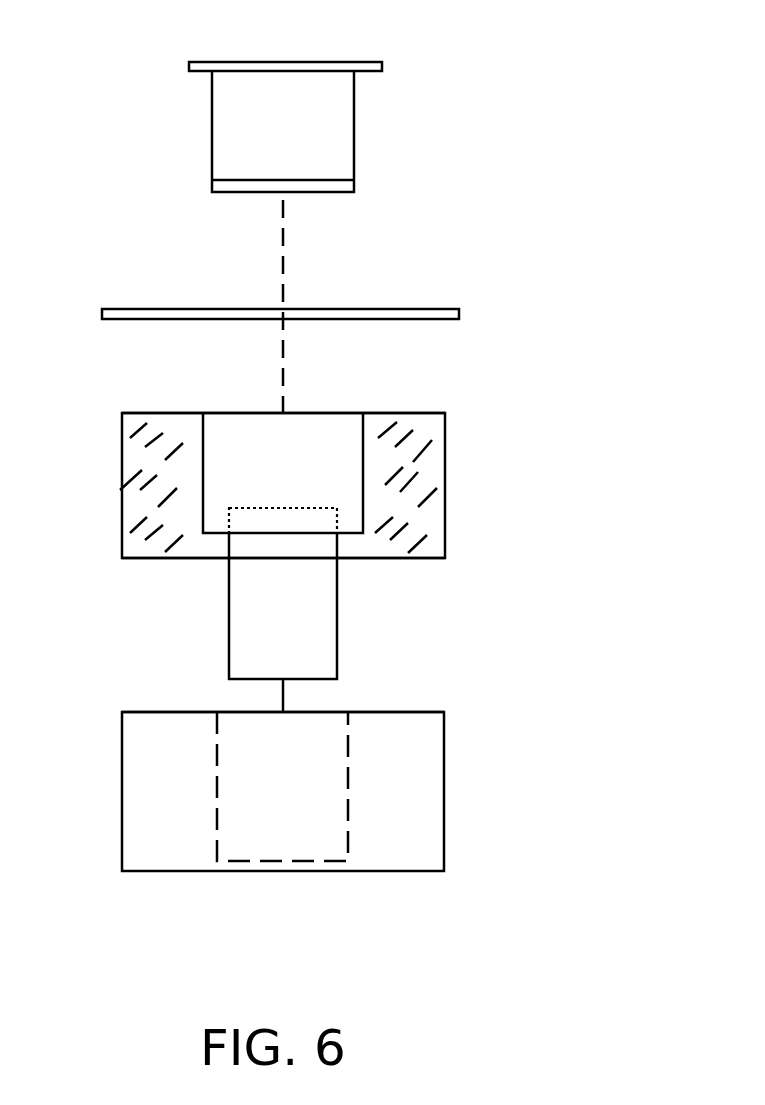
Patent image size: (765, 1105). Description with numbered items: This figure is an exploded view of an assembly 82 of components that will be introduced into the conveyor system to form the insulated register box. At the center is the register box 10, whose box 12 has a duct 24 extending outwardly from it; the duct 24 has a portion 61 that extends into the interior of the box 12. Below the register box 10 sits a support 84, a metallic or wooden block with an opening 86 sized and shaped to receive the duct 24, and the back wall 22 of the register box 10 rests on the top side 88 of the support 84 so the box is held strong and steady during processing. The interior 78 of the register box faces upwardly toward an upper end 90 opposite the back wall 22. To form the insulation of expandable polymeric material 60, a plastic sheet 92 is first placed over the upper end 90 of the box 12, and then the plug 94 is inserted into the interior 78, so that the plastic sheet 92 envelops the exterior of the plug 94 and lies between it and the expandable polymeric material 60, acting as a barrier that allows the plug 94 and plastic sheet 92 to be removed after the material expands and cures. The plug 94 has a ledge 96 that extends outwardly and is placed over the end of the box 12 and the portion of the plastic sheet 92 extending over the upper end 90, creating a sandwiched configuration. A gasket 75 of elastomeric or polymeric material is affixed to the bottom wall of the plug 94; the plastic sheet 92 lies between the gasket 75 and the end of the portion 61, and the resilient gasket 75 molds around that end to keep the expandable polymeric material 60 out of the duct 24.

The ledge 96 is at (372, 62).
The plug 94 is at (354, 137).
The gasket 75 is at (333, 185).
The plastic sheet 92 is at (437, 309).
The upper end 90 is at (397, 413).
The register box 10 is at (445, 520).
The box 12 is at (437, 470).
The expandable polymeric material 60 is at (140, 490).
The back wall 22 is at (170, 560).
The interior 78 is at (276, 472).
The portion 61 is at (340, 520).
The duct 24 is at (338, 630).
The support 84 is at (432, 790).
The top side 88 is at (150, 712).
The opening 86 is at (217, 805).
The assembly 82 is at (562, 408).